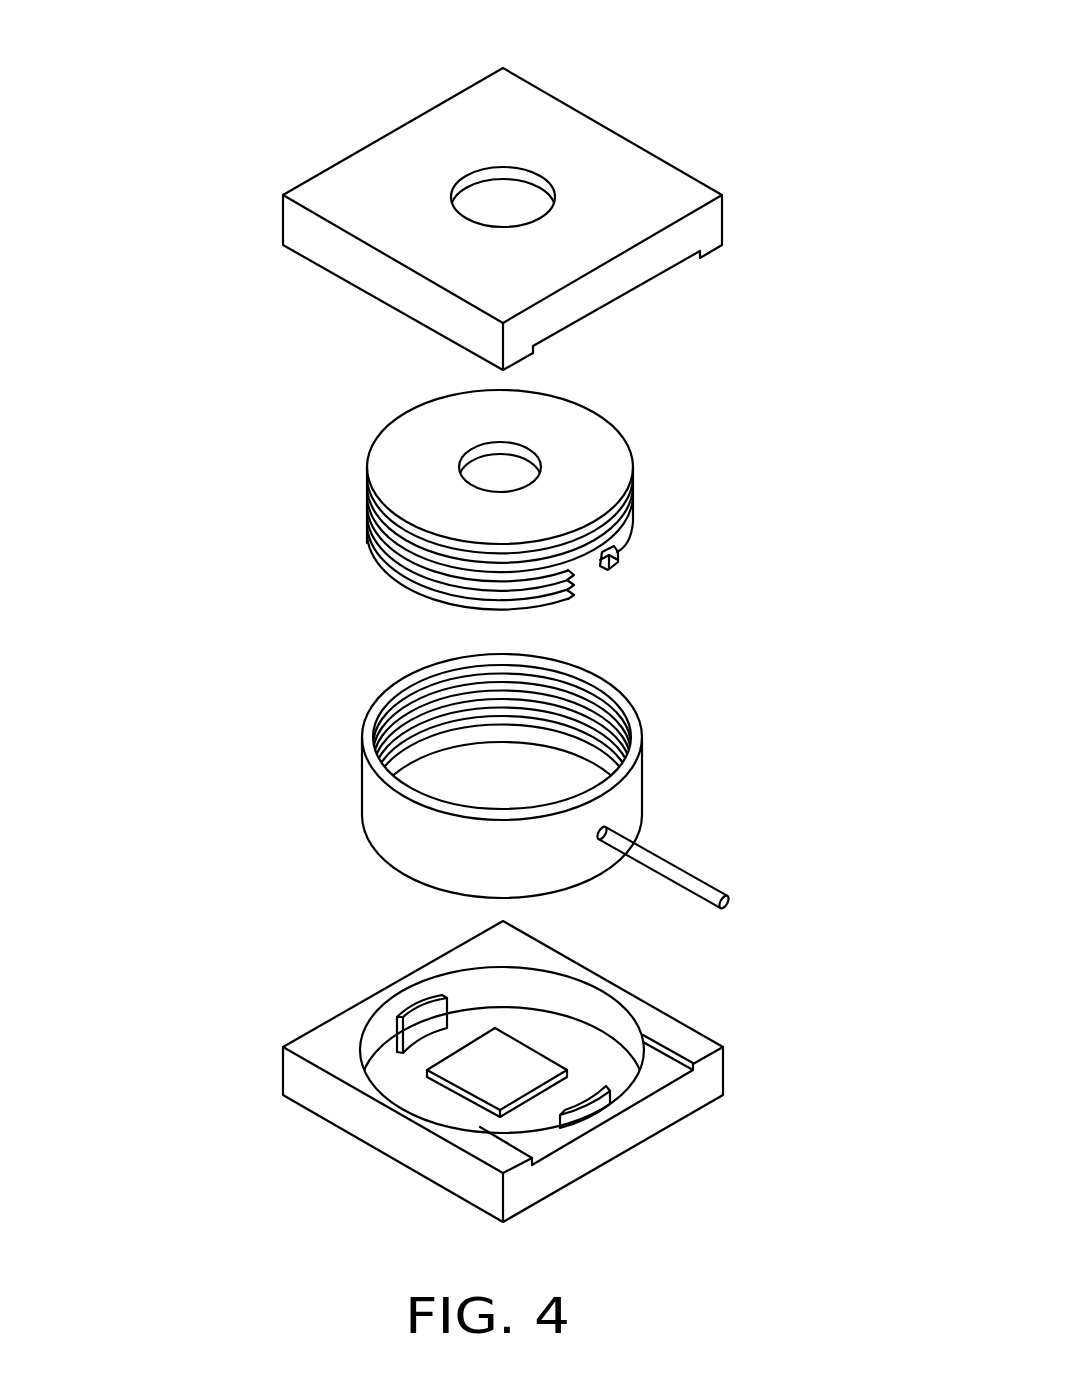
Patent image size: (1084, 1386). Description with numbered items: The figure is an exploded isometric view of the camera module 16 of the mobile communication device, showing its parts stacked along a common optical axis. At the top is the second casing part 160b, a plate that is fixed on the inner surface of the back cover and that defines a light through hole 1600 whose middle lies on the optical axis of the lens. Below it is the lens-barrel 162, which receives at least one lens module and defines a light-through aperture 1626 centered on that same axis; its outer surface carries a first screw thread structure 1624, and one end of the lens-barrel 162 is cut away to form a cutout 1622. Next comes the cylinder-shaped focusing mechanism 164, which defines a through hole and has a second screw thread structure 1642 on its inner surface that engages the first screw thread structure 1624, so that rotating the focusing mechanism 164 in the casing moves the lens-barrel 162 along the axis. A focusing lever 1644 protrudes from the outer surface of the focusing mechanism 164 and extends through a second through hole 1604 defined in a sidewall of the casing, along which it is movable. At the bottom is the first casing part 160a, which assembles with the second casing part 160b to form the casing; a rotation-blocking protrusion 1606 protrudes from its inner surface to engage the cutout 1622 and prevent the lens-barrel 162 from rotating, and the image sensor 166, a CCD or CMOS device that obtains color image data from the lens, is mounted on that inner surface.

The camera module 16 is at (460, 35).
The second casing part 160b is at (305, 229).
The light through hole 1600 is at (523, 198).
The lens-barrel 162 is at (595, 455).
The light-through aperture 1626 is at (508, 460).
The first screw thread structure 1624 is at (393, 543).
The cutout 1622 is at (588, 583).
The focusing mechanism 164 is at (650, 787).
The second screw thread structure 1642 is at (592, 702).
The focusing lever 1644 is at (707, 895).
The first casing part 160a is at (305, 1020).
The second through hole 1604 is at (665, 1068).
The rotation-blocking protrusion 1606 is at (417, 1008).
The image sensor 166 is at (485, 1075).